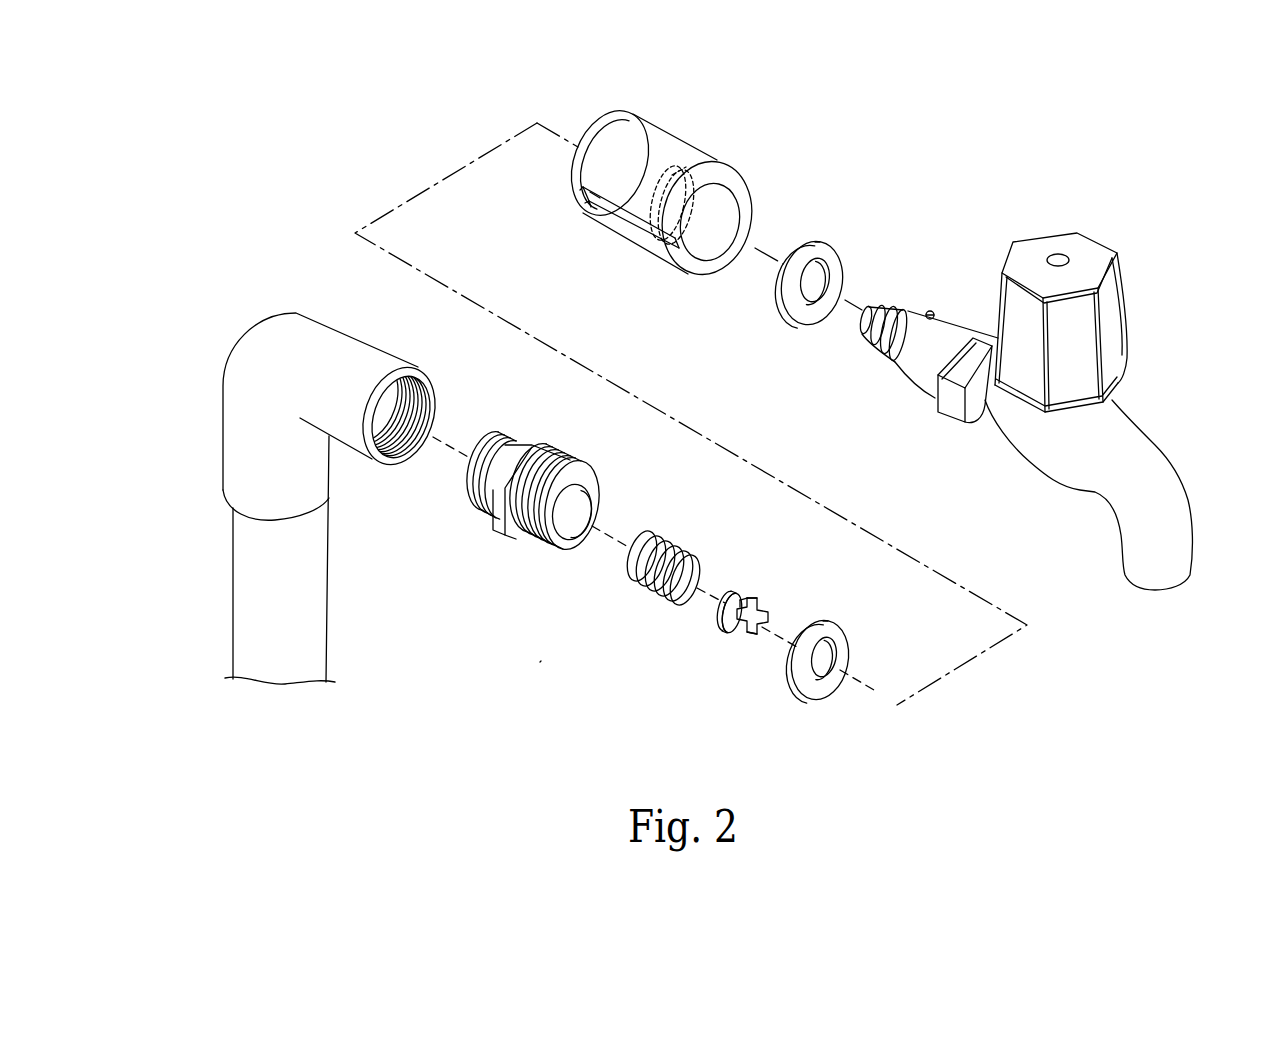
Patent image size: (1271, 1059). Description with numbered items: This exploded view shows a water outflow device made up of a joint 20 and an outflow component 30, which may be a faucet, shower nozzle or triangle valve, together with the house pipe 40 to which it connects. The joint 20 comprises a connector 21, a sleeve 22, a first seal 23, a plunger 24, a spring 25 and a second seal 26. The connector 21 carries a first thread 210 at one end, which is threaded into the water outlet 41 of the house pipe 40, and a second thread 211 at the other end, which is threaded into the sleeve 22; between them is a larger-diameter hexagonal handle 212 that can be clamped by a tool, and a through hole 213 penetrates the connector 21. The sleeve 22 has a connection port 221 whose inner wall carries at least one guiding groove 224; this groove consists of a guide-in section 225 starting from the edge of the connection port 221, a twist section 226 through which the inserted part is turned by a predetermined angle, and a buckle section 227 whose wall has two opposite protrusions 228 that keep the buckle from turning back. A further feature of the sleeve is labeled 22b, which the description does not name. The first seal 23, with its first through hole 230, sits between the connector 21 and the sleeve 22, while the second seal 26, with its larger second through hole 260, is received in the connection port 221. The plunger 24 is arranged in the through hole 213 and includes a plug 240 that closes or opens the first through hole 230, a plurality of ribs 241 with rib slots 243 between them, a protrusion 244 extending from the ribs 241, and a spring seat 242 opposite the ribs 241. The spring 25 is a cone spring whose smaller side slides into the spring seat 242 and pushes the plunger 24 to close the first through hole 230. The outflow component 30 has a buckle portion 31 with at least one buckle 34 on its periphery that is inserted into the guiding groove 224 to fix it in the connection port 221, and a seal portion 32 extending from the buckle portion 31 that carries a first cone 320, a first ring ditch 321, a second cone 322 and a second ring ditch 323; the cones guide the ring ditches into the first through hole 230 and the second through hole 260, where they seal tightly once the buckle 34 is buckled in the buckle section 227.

The joint 20 is at (540, 662).
The connector 21 is at (532, 543).
The first thread 210 is at (473, 487).
The second thread 211 is at (540, 532).
The handle 212 is at (500, 518).
The through hole 213 is at (583, 507).
The sleeve 22 is at (699, 192).
The notch 22b is at (593, 190).
The connection port 221 is at (740, 205).
The guiding groove 224 is at (630, 228).
The guide-in section 225 is at (666, 253).
The twist section 226 is at (657, 220).
The buckle section 227 is at (597, 203).
The protrusions 228 is at (683, 173).
The first seal 23 is at (843, 675).
The first through hole 230 is at (822, 677).
The plunger 24 is at (728, 654).
The plug 240 is at (725, 623).
The ribs 241 is at (738, 632).
The spring seat 242 is at (679, 640).
The rib slots 243 is at (747, 598).
The protrusion 244 is at (758, 610).
The spring 25 is at (637, 597).
The second seal 26 is at (806, 289).
The second through hole 260 is at (808, 303).
The outflow component 30 is at (1037, 405).
The buckle portion 31 is at (946, 321).
The seal portion 32 is at (880, 406).
The first cone 320 is at (862, 327).
The first ring ditch 321 is at (876, 333).
The second cone 322 is at (882, 360).
The second ring ditch 323 is at (922, 394).
The buckle 34 is at (931, 310).
The house pipe 40 is at (300, 495).
The water outlet 41 is at (425, 388).